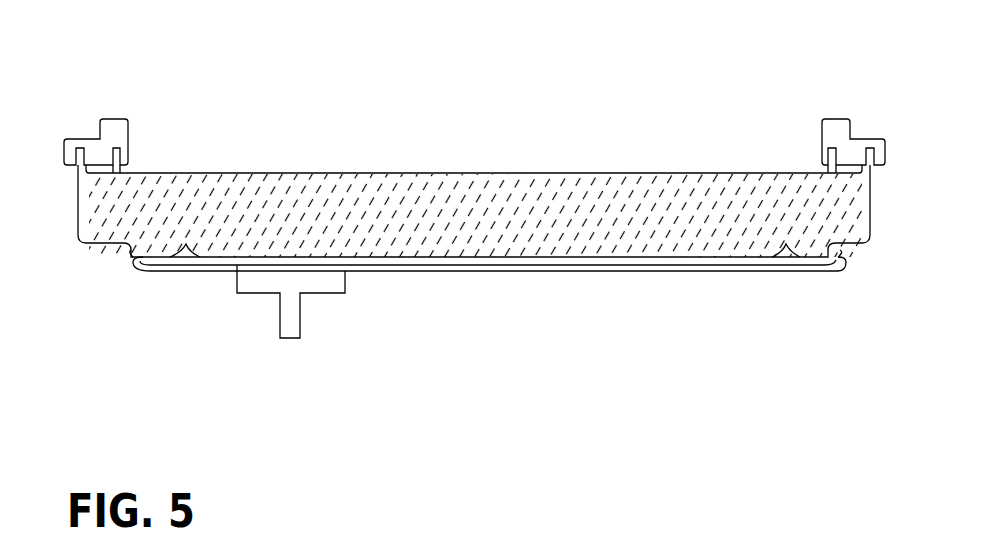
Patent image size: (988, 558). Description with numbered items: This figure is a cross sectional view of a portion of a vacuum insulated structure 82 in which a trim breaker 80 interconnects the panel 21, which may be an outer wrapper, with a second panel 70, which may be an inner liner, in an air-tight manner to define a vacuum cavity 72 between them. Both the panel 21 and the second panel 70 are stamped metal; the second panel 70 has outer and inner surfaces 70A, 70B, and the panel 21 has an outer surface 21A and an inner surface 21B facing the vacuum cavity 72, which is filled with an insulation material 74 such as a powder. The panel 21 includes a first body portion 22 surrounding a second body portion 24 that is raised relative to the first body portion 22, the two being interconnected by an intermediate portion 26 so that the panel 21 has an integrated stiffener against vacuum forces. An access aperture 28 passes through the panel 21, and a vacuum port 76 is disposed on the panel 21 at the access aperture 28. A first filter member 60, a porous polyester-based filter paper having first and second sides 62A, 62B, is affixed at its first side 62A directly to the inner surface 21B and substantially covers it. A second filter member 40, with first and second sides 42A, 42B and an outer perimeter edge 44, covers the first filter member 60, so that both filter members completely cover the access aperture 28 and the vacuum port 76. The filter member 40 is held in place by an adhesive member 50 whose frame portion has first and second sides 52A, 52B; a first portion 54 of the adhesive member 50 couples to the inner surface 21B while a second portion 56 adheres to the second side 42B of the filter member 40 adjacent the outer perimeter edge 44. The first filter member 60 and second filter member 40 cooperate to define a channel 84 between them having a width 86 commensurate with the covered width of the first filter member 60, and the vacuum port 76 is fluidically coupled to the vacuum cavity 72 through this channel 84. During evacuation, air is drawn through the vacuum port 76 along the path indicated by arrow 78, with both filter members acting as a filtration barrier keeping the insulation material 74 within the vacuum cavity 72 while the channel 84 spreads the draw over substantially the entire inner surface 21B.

The panel 21 is at (471, 286).
The outer surface of panel 21A is at (425, 270).
The inner surface 21B is at (388, 262).
The first body portion 22 is at (100, 250).
The second body portion 24 is at (167, 267).
The intermediate portion 26 is at (128, 265).
The access aperture 28 is at (332, 268).
The filter member 40 is at (557, 239).
The first side 42A is at (516, 262).
The second side 42B is at (502, 257).
The outer perimeter edge 44 is at (154, 272).
The adhesive member 50 is at (156, 243).
The first side 52A is at (135, 270).
The second side 52B is at (137, 248).
The first portion 54 is at (128, 256).
The second portion 56 is at (187, 255).
The first filter member 60 is at (603, 249).
The first side 62A is at (655, 257).
The second side 62B is at (637, 266).
The second panel 70 is at (288, 166).
The outer surface 70A is at (328, 173).
The inner surface 70B is at (328, 173).
The vacuum cavity 72 is at (384, 191).
The insulation material 74 is at (442, 198).
The vacuum port 76 is at (269, 306).
The arrow 78 is at (290, 272).
The trim breaker 80 is at (89, 121).
The vacuum insulated structure 82 is at (144, 86).
The channel 84 is at (562, 262).
The width 86 is at (698, 213).